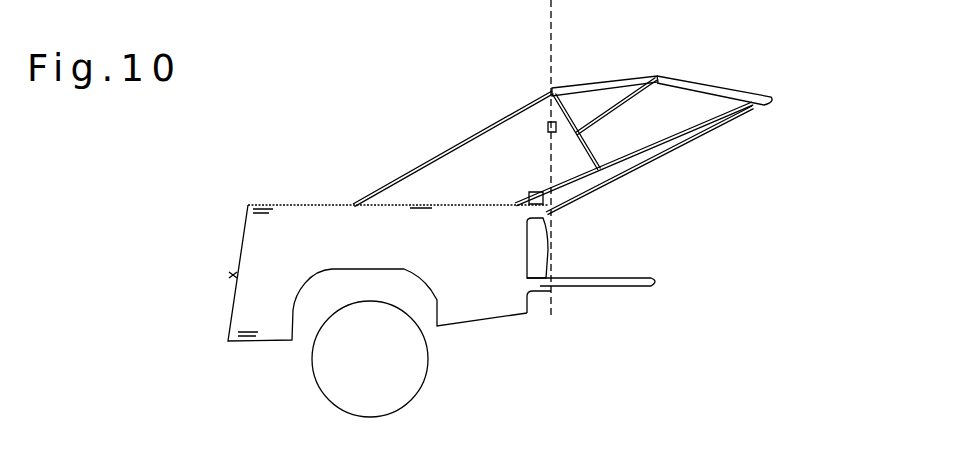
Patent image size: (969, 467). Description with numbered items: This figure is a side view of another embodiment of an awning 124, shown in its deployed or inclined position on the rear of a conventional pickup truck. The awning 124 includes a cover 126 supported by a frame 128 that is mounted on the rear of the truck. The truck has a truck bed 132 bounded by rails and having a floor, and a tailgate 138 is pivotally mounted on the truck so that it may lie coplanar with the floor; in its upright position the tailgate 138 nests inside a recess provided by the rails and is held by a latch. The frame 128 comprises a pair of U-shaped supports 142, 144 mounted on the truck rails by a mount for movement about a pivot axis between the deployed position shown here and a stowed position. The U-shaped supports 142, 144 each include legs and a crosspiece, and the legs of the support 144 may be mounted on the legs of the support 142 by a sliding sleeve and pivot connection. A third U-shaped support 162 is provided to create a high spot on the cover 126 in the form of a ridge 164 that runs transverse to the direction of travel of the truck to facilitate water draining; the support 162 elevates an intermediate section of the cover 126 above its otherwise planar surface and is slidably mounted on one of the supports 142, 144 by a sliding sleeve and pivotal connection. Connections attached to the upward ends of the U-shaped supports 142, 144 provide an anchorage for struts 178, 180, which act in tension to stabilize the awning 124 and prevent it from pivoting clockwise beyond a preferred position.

The awning 124 is at (772, 54).
The cover 126 is at (730, 90).
The frame 128 is at (600, 158).
The truck bed 132 is at (300, 204).
The tailgate 138 is at (626, 278).
The U-shaped support 142 is at (537, 183).
The U-shaped support 144 is at (553, 128).
The third U-shaped support 162 is at (593, 118).
The ridge 164 is at (663, 77).
The strut 178 is at (465, 140).
The strut 180 is at (637, 172).